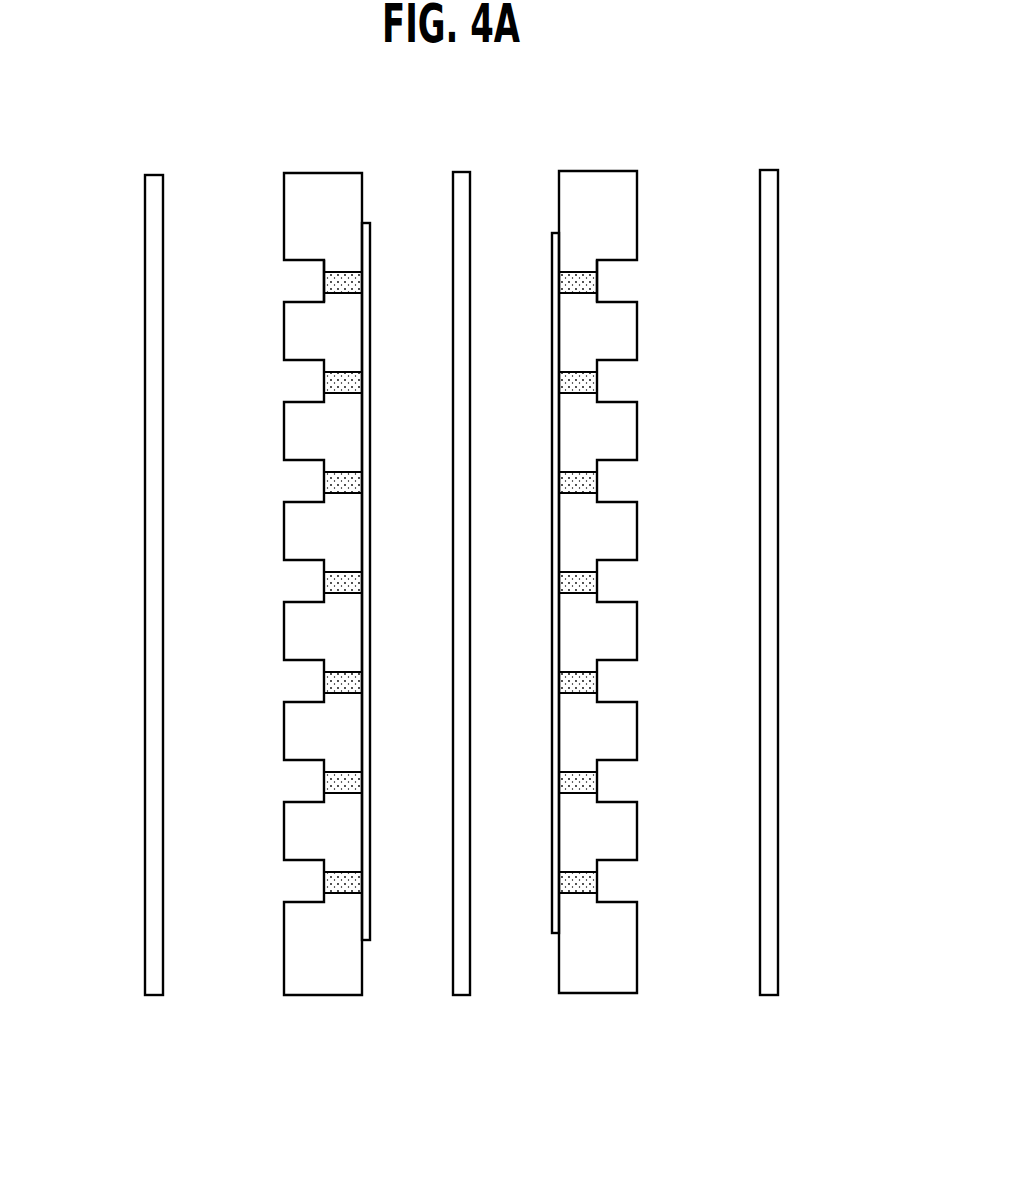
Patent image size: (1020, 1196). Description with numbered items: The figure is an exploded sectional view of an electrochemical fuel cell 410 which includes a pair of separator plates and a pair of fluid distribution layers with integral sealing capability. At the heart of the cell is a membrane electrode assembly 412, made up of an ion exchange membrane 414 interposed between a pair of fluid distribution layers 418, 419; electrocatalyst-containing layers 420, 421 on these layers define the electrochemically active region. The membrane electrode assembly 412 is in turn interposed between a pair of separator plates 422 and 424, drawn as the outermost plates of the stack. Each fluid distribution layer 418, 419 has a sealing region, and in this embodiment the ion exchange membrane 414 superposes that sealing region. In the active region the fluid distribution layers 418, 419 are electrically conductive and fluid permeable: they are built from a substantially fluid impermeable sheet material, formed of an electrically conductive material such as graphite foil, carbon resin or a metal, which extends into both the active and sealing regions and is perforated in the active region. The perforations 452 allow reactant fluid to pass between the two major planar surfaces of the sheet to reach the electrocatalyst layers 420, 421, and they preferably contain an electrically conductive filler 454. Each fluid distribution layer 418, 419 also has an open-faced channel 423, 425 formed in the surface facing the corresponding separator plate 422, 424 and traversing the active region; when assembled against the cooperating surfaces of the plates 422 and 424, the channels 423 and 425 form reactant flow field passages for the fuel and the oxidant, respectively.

The electrochemical fuel cell 410 is at (774, 108).
The membrane electrode assembly 412 is at (675, 1050).
The ion exchange membrane 414 is at (467, 173).
The fluid distribution layer 418 is at (339, 150).
The fluid distribution layer 419 is at (599, 146).
The electrocatalyst-containing layer 420 is at (365, 228).
The electrocatalyst-containing layer 421 is at (550, 265).
The separator plate 422 is at (146, 240).
The open-faced channel 423 is at (296, 279).
The separator plate 424 is at (768, 228).
The open-faced channel 425 is at (618, 282).
The perforations 452 is at (325, 782).
The electrically conductive filler 454 is at (590, 780).